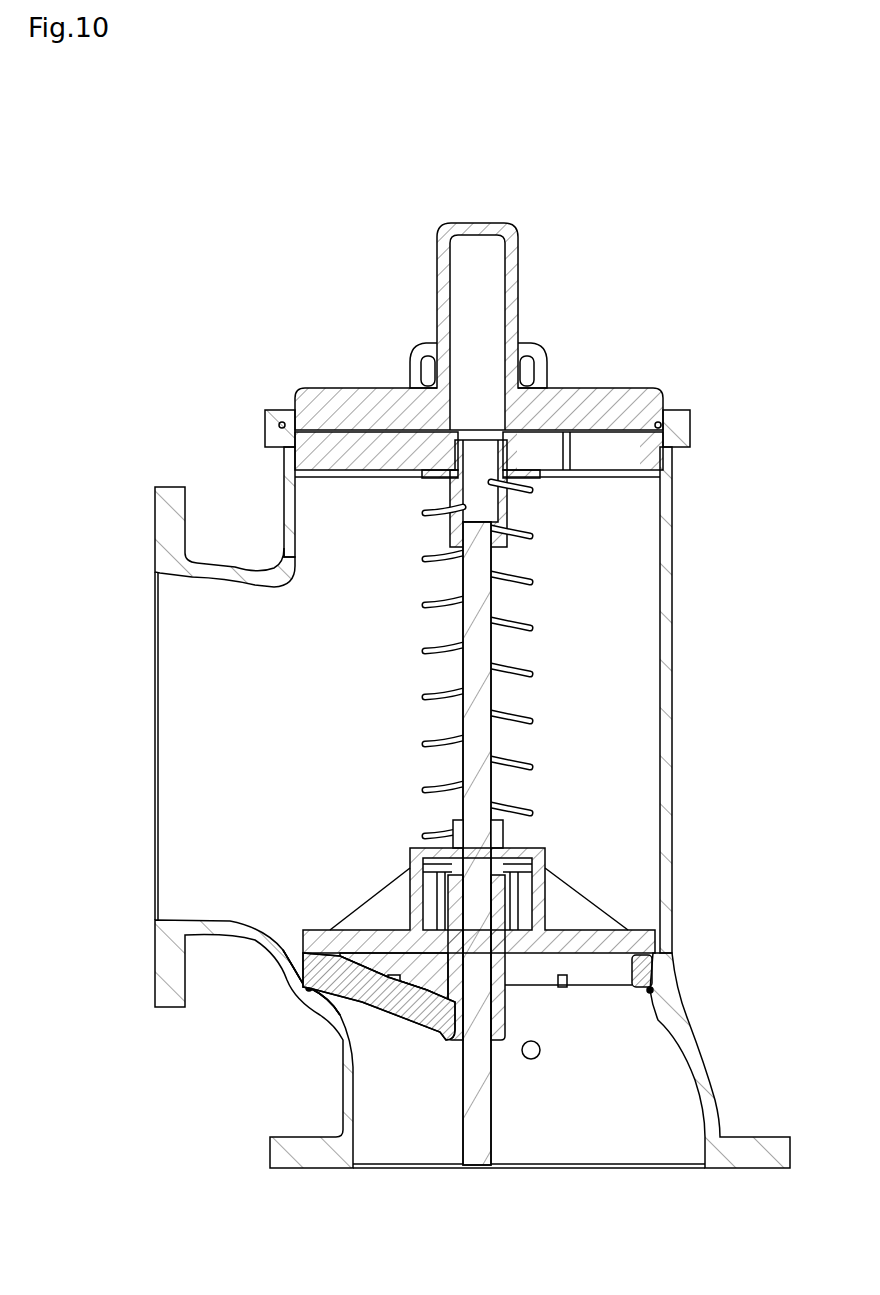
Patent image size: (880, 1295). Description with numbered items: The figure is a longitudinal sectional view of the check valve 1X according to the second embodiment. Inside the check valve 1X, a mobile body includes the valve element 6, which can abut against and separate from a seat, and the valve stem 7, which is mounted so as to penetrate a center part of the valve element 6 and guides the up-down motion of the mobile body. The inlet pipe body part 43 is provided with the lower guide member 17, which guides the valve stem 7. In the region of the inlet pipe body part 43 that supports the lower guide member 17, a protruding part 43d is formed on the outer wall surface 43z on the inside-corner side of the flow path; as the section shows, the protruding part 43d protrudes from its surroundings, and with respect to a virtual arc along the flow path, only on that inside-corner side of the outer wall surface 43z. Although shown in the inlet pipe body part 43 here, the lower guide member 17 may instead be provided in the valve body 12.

The check valve 1X is at (204, 293).
The valve body 12 is at (672, 650).
The valve stem 7 is at (480, 738).
The valve element 6 is at (597, 882).
The inlet pipe body part 43 is at (688, 992).
The protruding part 43d is at (297, 1003).
The outer wall surface 43z is at (311, 982).
The lower guide member 17 is at (407, 1007).